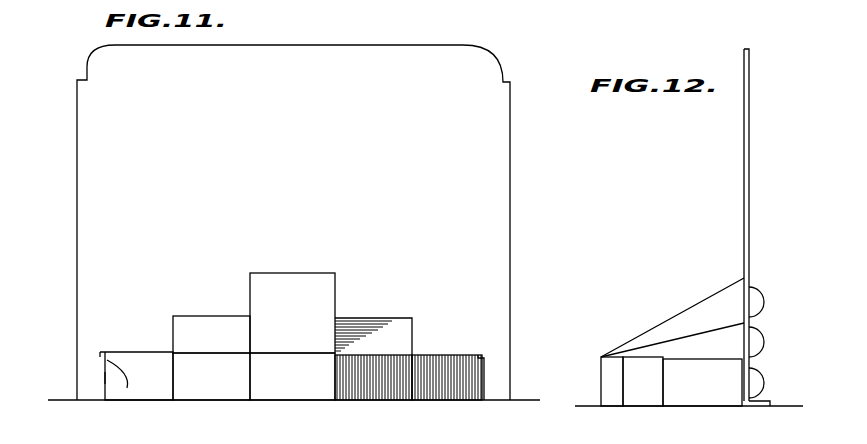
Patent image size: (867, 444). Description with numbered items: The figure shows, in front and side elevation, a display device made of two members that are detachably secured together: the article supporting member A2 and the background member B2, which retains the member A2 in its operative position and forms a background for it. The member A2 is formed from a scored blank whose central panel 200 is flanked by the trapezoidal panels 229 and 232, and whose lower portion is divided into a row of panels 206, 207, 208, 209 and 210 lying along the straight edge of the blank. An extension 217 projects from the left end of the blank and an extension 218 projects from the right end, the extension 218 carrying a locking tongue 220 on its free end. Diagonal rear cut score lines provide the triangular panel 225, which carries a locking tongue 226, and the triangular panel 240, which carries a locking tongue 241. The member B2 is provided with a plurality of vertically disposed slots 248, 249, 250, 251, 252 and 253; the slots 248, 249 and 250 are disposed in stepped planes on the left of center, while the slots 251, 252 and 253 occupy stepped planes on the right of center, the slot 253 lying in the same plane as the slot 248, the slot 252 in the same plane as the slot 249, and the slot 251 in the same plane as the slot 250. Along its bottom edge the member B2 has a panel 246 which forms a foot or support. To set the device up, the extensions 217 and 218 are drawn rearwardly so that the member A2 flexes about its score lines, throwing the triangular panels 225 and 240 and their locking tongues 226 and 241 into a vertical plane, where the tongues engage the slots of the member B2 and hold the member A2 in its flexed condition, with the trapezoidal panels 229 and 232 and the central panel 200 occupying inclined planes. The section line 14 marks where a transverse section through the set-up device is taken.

In FIG. 11, the section line 14 is at (275, 233).
In FIG. 11, the central panel 200 is at (292, 313).
In FIG. 11, the panel 206 is at (136, 376).
In FIG. 11, the panel 207 is at (211, 376).
In FIG. 11, the panel 208 is at (292, 376).
In FIG. 11, the panel 209 is at (379, 391).
In FIG. 12, the panel 209 is at (605, 368).
In FIG. 11, the panel 210 is at (442, 394).
In FIG. 12, the panel 210 is at (640, 393).
In FIG. 11, the extension 217 is at (127, 388).
In FIG. 12, the extension 218 is at (690, 395).
In FIG. 12, the locking tongue 220 is at (762, 383).
In FIG. 12, the triangular panel 225 is at (705, 308).
In FIG. 12, the locking tongue 226 is at (762, 304).
In FIG. 11, the trapezoidal panel 229 is at (211, 334).
In FIG. 11, the trapezoidal panel 232 is at (369, 318).
In FIG. 12, the triangular panel 240 is at (676, 347).
In FIG. 12, the locking tongue 241 is at (762, 343).
In FIG. 12, the panel 246 is at (760, 405).
In FIG. 11, the slot 248 is at (105, 377).
In FIG. 11, the slot 249 is at (173, 333).
In FIG. 11, the slot 250 is at (250, 292).
In FIG. 11, the slot 251 is at (336, 288).
In FIG. 11, the slot 252 is at (413, 333).
In FIG. 11, the slot 253 is at (484, 378).
In FIG. 11, the article supporting member A2 is at (198, 394).
In FIG. 11, the background member B2 is at (458, 63).
In FIG. 12, the background member B2 is at (752, 78).